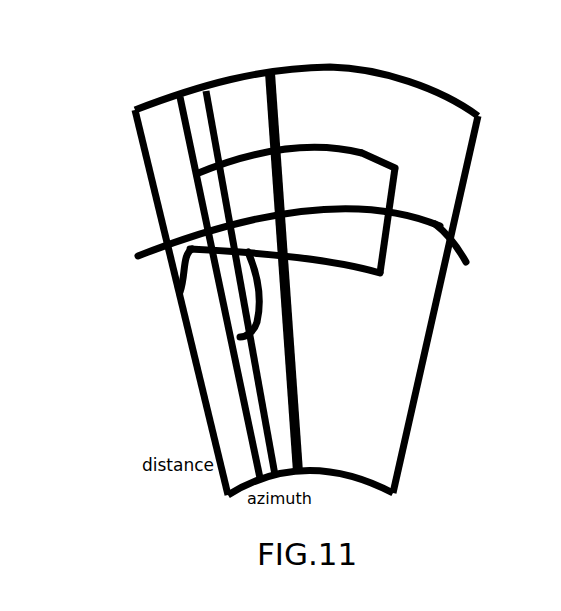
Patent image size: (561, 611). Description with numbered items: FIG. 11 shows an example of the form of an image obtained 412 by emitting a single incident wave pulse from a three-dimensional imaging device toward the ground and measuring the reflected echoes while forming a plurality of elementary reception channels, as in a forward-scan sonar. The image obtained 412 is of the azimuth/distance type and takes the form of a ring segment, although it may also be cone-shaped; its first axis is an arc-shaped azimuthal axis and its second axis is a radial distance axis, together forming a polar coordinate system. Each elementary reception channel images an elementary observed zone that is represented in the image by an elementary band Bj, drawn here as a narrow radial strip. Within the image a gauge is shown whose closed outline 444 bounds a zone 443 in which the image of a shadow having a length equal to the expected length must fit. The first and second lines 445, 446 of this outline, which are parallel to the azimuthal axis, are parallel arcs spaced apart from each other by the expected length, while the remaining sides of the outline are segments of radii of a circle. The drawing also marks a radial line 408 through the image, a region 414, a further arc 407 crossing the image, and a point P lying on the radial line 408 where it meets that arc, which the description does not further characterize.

The image obtained 412 is at (111, 89).
The azimuth cut line 408 is at (266, 103).
The range-azimuth cell region 414 is at (328, 143).
The first line of the outline 445 is at (361, 167).
The range arc 407 is at (448, 213).
The closed outline 444 is at (178, 289).
The zone 443 is at (240, 337).
The second line of the outline 446 is at (327, 268).
The elementary band Bj is at (199, 100).
The point P is at (283, 209).